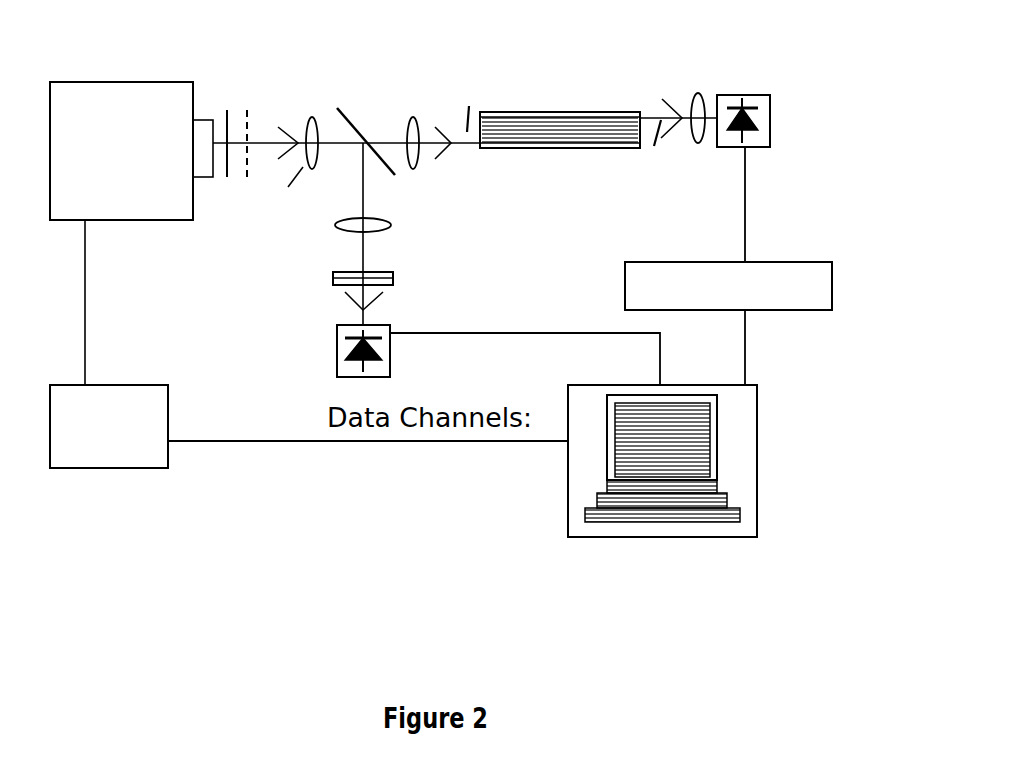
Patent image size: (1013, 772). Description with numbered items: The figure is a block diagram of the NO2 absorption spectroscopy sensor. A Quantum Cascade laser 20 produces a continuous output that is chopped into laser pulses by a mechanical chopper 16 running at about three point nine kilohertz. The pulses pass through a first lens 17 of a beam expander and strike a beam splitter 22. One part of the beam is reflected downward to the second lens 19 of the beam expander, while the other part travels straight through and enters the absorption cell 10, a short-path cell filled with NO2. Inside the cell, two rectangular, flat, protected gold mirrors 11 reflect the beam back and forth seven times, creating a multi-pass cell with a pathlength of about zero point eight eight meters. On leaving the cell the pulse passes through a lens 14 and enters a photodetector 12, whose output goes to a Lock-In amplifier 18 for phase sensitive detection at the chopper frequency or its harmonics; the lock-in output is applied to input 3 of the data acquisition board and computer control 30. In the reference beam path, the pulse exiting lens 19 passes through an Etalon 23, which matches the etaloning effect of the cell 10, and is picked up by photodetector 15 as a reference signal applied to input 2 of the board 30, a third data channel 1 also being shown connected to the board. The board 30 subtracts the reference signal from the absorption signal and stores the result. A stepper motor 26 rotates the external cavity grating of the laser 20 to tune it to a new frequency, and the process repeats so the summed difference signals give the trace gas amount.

The Quantum Cascade laser 20 is at (75, 82).
The mechanical chopper 16 is at (257, 102).
The first lens 17 is at (273, 157).
The beam splitter 22 is at (363, 118).
The second lens 19 is at (418, 178).
The protected gold mirrors 11 is at (467, 120).
The absorption cell 10 is at (572, 172).
The lens 14 is at (698, 92).
The photodetector 12 is at (770, 134).
The Lock-In amplifier 18 is at (832, 285).
The Etalon 23 is at (393, 278).
The photodetector 15 is at (337, 365).
The stepper motor 26 is at (115, 385).
The data acquisition board and computer control 30 is at (757, 455).
The data channel 1 is at (368, 423).
The input 2 is at (525, 359).
The input 3 is at (735, 347).